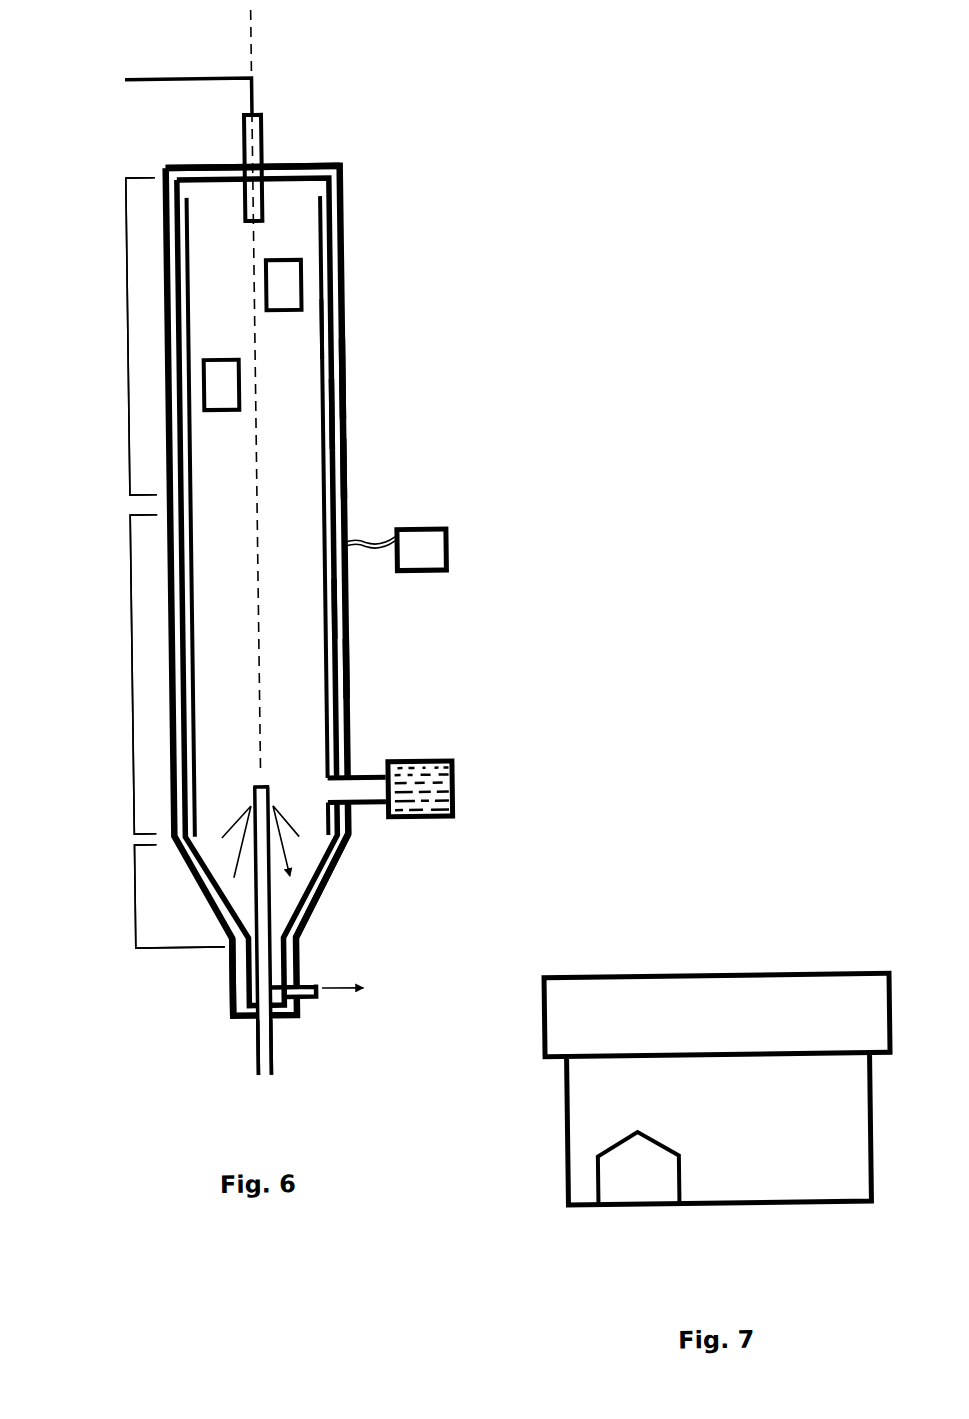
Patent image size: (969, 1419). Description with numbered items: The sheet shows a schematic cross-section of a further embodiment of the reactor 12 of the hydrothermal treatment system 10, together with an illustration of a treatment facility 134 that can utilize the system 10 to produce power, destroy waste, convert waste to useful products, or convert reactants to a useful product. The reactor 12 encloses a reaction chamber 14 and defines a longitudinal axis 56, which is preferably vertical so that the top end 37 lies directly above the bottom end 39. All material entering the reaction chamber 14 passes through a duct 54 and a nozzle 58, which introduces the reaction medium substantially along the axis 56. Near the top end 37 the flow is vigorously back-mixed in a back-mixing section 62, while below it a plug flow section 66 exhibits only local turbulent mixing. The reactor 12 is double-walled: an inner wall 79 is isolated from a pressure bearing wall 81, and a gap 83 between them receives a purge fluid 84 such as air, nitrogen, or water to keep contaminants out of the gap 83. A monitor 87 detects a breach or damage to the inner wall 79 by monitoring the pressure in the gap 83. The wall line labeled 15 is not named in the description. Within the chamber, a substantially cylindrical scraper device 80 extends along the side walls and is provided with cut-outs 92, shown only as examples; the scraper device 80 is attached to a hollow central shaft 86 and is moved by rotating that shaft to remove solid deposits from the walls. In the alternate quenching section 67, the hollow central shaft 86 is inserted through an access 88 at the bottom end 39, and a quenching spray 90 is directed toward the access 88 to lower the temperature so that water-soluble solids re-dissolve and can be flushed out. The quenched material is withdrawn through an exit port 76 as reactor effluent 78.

In FIG. 6, the longitudinal axis 56 is at (259, 10).
In FIG. 6, the duct 54 is at (190, 76).
In FIG. 6, the nozzle 58 is at (268, 125).
In FIG. 6, the top end 37 is at (334, 160).
In FIG. 6, the cut-outs 92 is at (298, 278).
In FIG. 6, the scraper device 80 is at (323, 328).
In FIG. 6, the back-mixing section 62 is at (129, 315).
In FIG. 6, the reactor 12 is at (346, 383).
In FIG. 6, the inner wall 79 is at (334, 413).
In FIG. 6, the outer wall 15 is at (344, 464).
In FIG. 6, the reaction chamber 14 is at (297, 509).
In FIG. 6, the monitor 87 is at (437, 555).
In FIG. 6, the plug flow section 66 is at (126, 616).
In FIG. 6, the gap 83 is at (333, 606).
In FIG. 6, the pressure bearing wall 81 is at (343, 674).
In FIG. 6, the purge fluid 84 is at (451, 793).
In FIG. 6, the quenching spray 90 is at (278, 818).
In FIG. 6, the bottom end 39 is at (327, 866).
In FIG. 6, the quenching section 67 is at (122, 886).
In FIG. 6, the exit port 76 is at (306, 983).
In FIG. 6, the access 88 is at (230, 975).
In FIG. 6, the reactor effluent 78 is at (351, 994).
In FIG. 6, the hollow central shaft 86 is at (249, 1060).
In FIG. 7, the treatment facility 134 is at (700, 973).
In FIG. 7, the hydrothermal treatment system 10 is at (653, 1155).